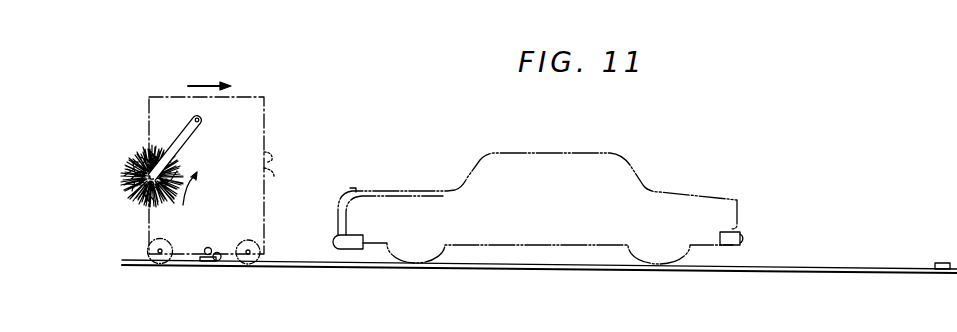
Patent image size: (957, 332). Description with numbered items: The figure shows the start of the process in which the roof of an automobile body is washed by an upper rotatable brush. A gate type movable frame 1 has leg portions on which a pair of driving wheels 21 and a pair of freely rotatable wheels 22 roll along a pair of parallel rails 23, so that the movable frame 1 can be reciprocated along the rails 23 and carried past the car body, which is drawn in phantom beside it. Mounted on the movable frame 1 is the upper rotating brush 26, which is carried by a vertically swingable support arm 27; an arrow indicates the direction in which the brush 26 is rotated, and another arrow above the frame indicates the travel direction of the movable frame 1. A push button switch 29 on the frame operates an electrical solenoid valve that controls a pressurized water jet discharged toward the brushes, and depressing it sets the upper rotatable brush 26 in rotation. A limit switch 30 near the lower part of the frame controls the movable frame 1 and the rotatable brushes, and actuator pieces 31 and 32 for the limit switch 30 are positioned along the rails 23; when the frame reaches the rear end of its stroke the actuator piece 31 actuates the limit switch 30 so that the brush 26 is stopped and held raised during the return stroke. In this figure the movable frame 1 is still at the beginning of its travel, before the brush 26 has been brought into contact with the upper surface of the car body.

The gate type movable frame 1 is at (265, 118).
The driving wheels 21 is at (145, 245).
The freely rotatable wheels 22 is at (258, 253).
The parallel rails 23 is at (793, 268).
The upper rotating brush 26 is at (124, 166).
The vertically swingable support arm 27 is at (184, 136).
The push button switch 29 is at (273, 175).
The limit switch 30 is at (204, 232).
The actuator piece 31 is at (944, 265).
The actuator piece 32 is at (205, 264).